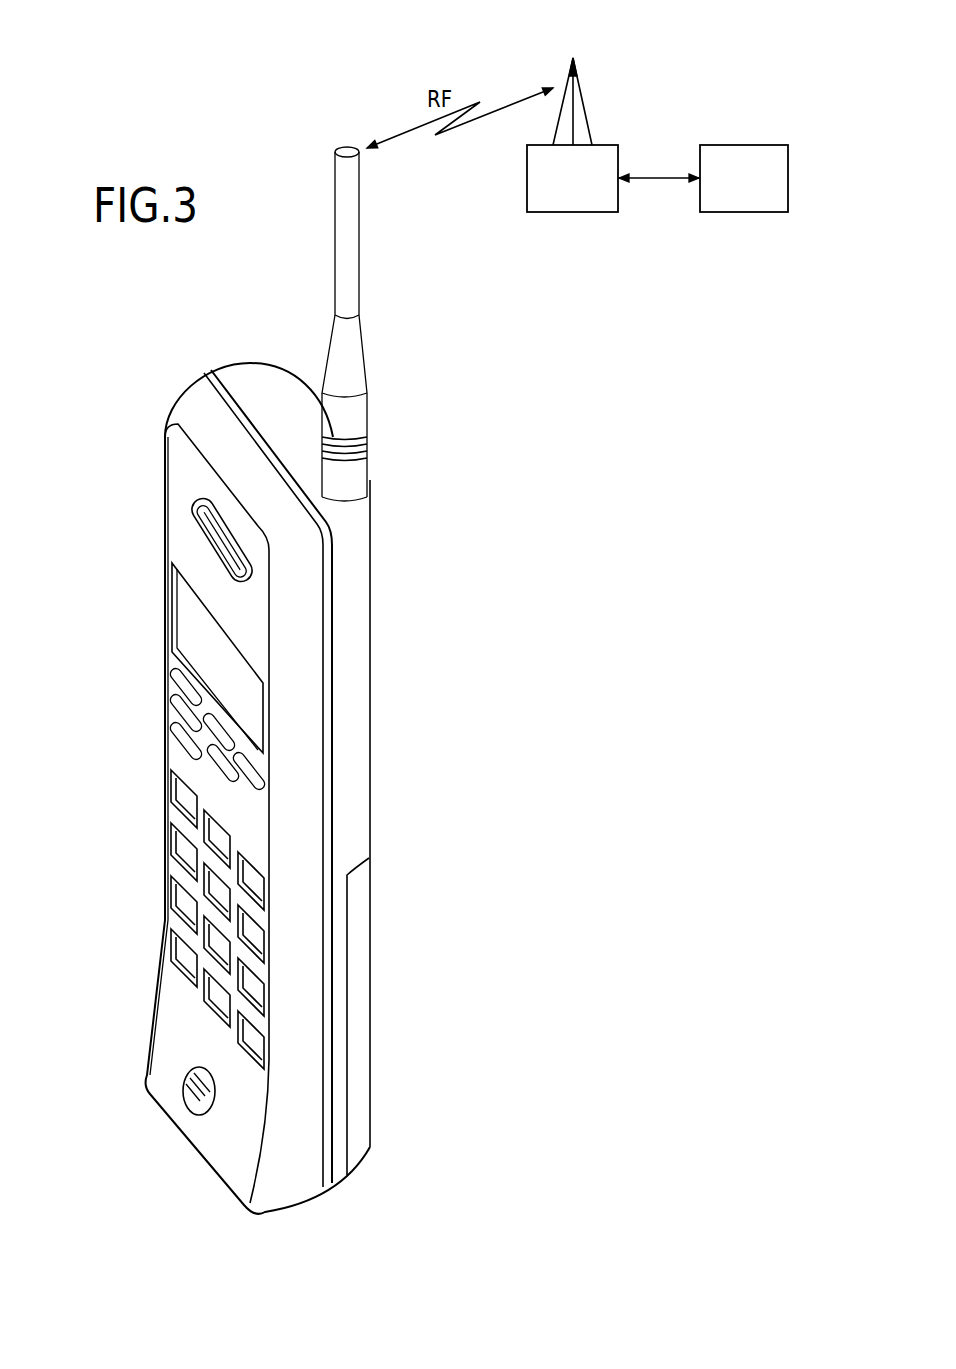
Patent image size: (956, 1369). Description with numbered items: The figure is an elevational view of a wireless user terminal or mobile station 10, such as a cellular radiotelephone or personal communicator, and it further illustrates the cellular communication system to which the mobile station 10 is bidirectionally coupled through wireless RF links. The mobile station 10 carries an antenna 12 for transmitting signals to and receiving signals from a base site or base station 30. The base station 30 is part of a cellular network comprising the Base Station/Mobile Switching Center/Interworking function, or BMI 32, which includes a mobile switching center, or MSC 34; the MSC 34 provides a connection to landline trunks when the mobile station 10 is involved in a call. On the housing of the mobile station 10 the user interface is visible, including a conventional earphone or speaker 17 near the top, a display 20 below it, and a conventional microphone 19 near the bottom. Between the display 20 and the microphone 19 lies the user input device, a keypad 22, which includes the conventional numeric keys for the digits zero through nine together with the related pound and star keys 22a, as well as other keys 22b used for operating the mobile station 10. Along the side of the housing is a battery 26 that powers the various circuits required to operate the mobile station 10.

The mobile station 10 is at (145, 375).
The antenna 12 is at (338, 222).
The speaker 17 is at (207, 522).
The microphone 19 is at (193, 1100).
The display 20 is at (185, 625).
The keypad 22 is at (265, 932).
The numeric and related keys 22a is at (178, 945).
The other keys 22b is at (170, 735).
The battery 26 is at (364, 993).
The base station 30 is at (575, 213).
The Base Station/Mobile Switching Center/Interworking function (BMI) 32 is at (797, 58).
The mobile switching center (MSC) 34 is at (722, 146).